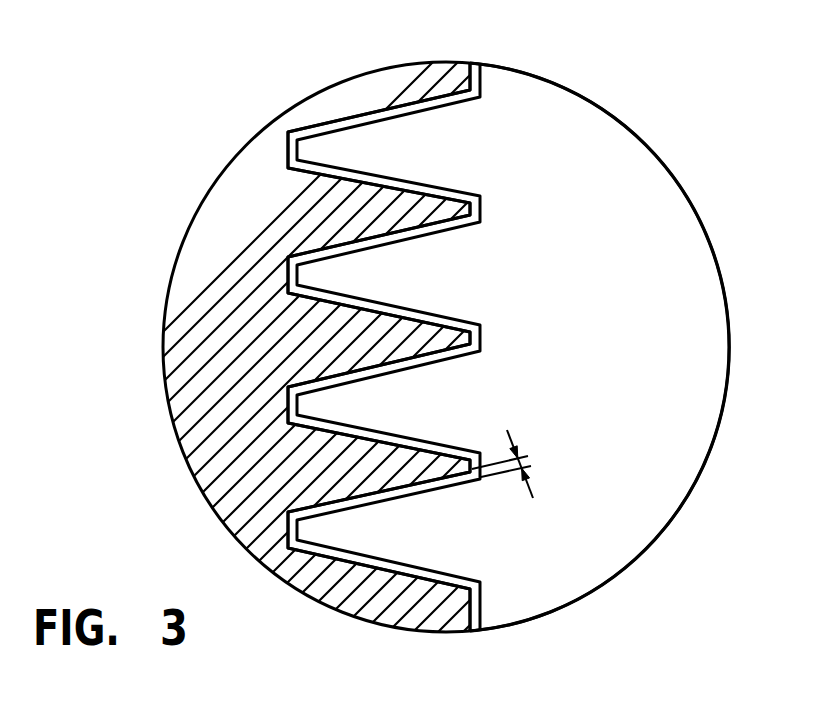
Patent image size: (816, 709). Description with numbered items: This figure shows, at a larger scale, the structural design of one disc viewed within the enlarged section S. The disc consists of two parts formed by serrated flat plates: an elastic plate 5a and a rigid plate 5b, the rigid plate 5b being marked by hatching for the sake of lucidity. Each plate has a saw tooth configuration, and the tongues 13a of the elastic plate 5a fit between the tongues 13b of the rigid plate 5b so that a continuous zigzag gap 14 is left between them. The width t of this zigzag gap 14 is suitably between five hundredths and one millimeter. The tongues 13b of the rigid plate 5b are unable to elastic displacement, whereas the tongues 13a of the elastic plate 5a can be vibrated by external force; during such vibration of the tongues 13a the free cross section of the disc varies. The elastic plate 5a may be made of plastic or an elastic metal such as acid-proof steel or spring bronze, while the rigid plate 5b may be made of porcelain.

The enlarged section view circle S is at (670, 167).
The elastic plate 5a is at (638, 250).
The rigid plate 5b is at (260, 220).
The tongues of the elastic plate 13a is at (393, 143).
The tongues of the rigid plate 13b is at (325, 400).
The zigzag gap 14 is at (331, 427).
The width of the zigzag gap t is at (527, 462).